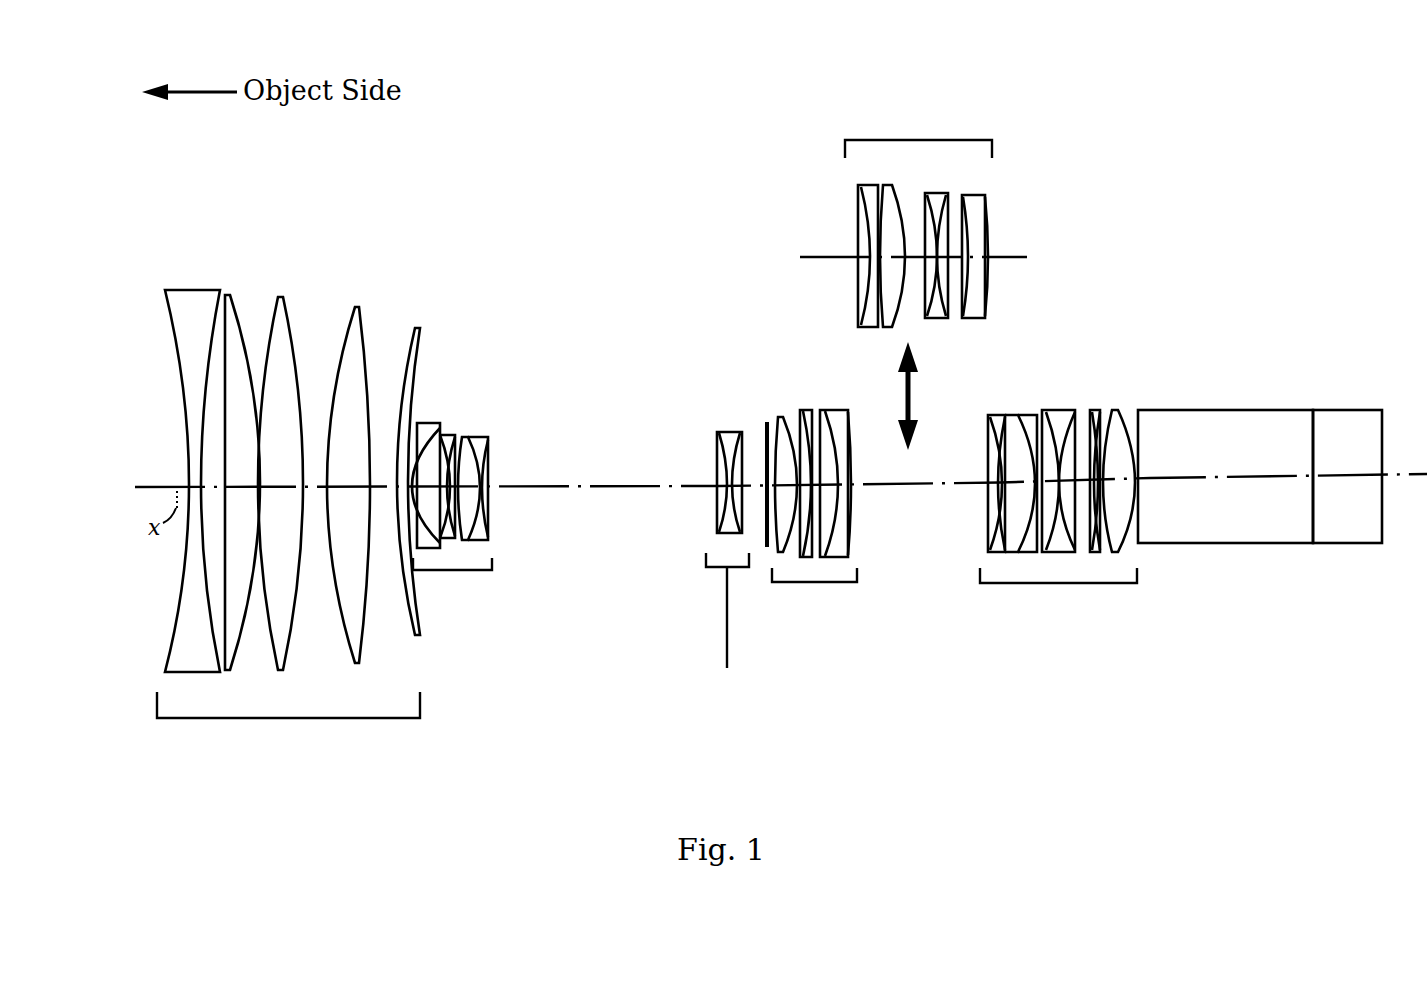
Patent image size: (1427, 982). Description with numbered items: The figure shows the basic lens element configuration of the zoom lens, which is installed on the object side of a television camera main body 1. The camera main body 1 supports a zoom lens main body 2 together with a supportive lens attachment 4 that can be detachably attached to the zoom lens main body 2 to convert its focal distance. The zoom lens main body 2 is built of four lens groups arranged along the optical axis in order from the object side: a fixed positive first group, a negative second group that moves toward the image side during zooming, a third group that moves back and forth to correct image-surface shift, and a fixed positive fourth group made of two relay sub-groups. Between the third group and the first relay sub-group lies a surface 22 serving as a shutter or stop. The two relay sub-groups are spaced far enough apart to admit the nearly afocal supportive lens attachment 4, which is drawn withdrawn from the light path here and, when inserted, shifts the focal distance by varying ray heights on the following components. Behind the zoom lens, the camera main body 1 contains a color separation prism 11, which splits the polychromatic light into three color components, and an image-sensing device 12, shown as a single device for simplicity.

The television camera main body 1 is at (1281, 407).
The zoom lens main body 2 is at (647, 517).
The supportive lens attachment 4 is at (1013, 214).
The color separation prism 11 is at (1275, 410).
The image-sensing device 12 is at (1424, 448).
The surface serving as a shutter or stop 22 is at (766, 441).